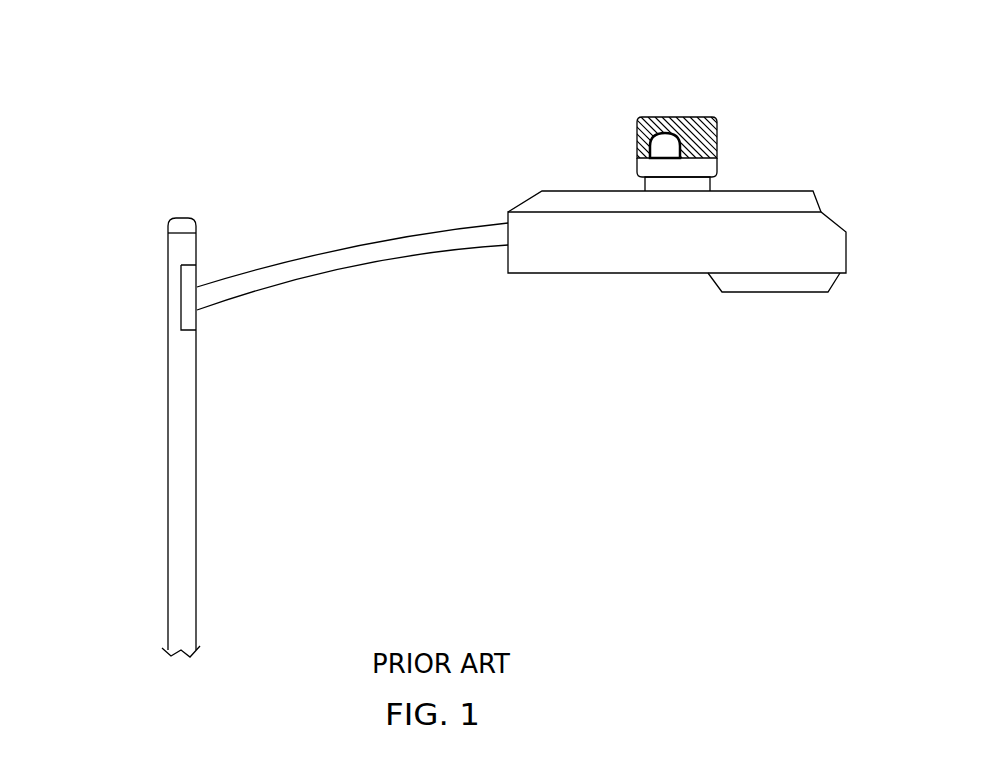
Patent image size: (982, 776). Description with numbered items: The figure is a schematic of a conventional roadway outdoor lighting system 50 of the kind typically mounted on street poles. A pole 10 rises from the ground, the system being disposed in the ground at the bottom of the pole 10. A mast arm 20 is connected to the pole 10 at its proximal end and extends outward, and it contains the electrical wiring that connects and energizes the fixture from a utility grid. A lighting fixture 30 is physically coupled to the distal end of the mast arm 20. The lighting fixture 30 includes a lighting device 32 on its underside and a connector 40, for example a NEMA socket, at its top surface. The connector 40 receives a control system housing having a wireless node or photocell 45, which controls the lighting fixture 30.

The pole 10 is at (167, 308).
The mast arm 20 is at (297, 258).
The lighting fixture 30 is at (780, 201).
The lighting device 32 is at (773, 293).
The connector 40 is at (702, 185).
The wireless node or photocell 45 is at (692, 116).
The roadway outdoor lighting system 50 is at (303, 110).